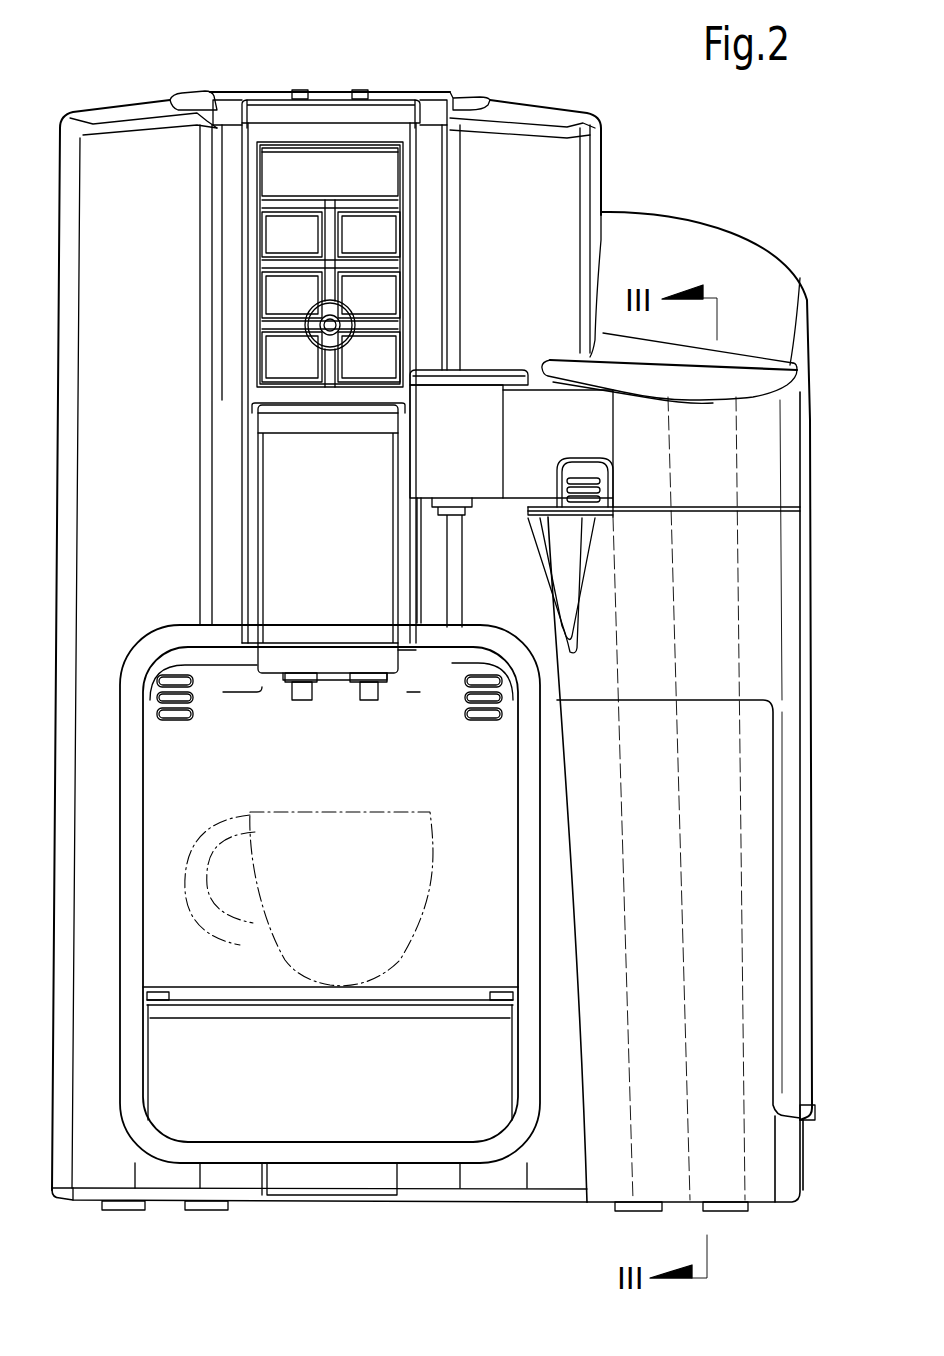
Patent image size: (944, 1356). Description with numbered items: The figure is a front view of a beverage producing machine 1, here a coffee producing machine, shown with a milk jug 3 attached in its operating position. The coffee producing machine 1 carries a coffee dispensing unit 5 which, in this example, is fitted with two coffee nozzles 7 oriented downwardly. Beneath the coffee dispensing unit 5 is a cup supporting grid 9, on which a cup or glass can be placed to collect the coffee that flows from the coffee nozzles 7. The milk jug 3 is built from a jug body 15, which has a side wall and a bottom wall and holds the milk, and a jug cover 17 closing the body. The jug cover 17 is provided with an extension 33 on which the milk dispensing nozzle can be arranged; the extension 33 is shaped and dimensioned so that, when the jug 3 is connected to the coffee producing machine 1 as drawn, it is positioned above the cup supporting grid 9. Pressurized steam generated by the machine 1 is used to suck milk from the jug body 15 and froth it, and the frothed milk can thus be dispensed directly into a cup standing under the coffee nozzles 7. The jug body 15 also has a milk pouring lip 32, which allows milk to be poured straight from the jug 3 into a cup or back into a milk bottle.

The beverage producing machine 1 is at (568, 92).
The milk jug 3 is at (758, 603).
The coffee dispensing unit 5 is at (315, 505).
The coffee nozzles 7 is at (300, 700).
The cup supporting grid 9 is at (433, 985).
The jug body 15 is at (758, 947).
The jug cover 17 is at (750, 377).
The milk pouring lip 32 is at (560, 537).
The extension 33 is at (467, 413).